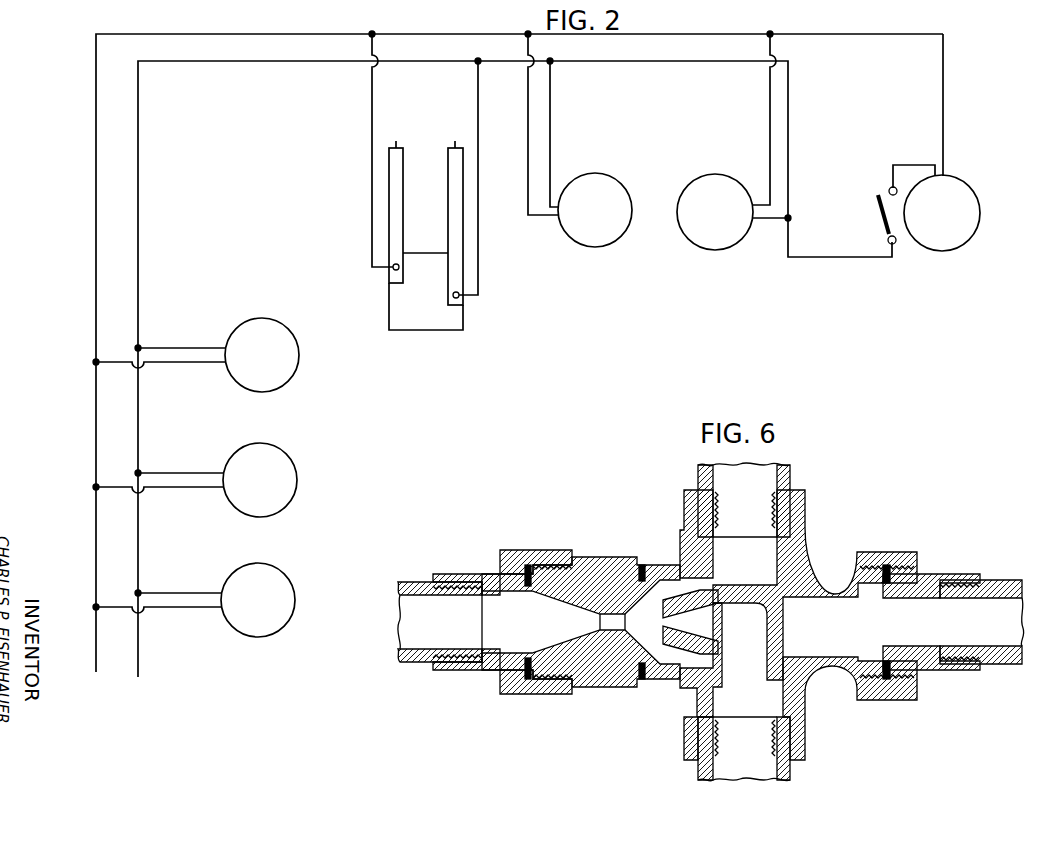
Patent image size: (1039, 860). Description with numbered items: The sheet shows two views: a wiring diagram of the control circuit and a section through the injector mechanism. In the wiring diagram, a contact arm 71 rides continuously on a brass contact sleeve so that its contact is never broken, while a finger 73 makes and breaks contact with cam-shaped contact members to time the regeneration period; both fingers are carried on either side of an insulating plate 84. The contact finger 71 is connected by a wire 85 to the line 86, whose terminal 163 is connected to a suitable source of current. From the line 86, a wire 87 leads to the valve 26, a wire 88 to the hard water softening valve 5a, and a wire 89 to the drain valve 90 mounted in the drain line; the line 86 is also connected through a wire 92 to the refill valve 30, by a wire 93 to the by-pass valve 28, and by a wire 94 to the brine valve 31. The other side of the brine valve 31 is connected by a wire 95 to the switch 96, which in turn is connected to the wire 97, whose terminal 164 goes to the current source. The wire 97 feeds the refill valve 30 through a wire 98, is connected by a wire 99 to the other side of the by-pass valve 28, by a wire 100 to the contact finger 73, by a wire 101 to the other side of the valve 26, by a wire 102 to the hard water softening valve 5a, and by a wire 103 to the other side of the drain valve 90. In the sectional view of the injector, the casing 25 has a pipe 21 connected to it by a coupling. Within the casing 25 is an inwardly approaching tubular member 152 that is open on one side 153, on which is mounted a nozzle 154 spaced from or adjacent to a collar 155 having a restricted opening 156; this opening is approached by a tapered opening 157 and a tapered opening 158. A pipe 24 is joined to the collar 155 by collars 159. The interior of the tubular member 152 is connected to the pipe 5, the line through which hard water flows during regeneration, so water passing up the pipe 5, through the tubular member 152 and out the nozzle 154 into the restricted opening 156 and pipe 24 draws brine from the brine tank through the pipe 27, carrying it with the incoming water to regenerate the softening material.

In FIG. 2, the line 86 is at (274, 34).
In FIG. 2, the wire 97 is at (238, 62).
In FIG. 2, the wire 85 is at (370, 100).
In FIG. 2, the wire 100 is at (479, 103).
In FIG. 2, the contact arm 71 is at (397, 201).
In FIG. 2, the finger 73 is at (454, 212).
In FIG. 2, the insulating plate 84 is at (465, 328).
In FIG. 2, the wire 99 is at (551, 144).
In FIG. 2, the wire 93 is at (528, 189).
In FIG. 2, the by-pass valve 28 is at (621, 239).
In FIG. 2, the wire 92 is at (769, 98).
In FIG. 2, the refill valve 30 is at (711, 175).
In FIG. 2, the wire 98 is at (766, 222).
In FIG. 2, the wire 94 is at (945, 74).
In FIG. 2, the wire 95 is at (893, 165).
In FIG. 2, the switch 96 is at (879, 215).
In FIG. 2, the brine valve 31 is at (957, 247).
In FIG. 2, the wire 101 is at (164, 348).
In FIG. 2, the wire 87 is at (195, 364).
In FIG. 2, the valve 26 is at (298, 372).
In FIG. 2, the wire 102 is at (164, 473).
In FIG. 2, the wire 88 is at (195, 489).
In FIG. 2, the hard water softening valve 5a is at (297, 464).
In FIG. 2, the wire 103 is at (164, 593).
In FIG. 2, the wire 89 is at (195, 609).
In FIG. 2, the drain valve 90 is at (289, 589).
In FIG. 2, the terminal 163 is at (94, 648).
In FIG. 2, the terminal 164 is at (139, 660).
In FIG. 6, the pipe 24 is at (406, 666).
In FIG. 6, the collars 159 is at (478, 672).
In FIG. 6, the collar 155 is at (621, 690).
In FIG. 6, the tapered opening 158 is at (544, 604).
In FIG. 6, the restricted opening 156 is at (598, 626).
In FIG. 6, the tapered opening 157 is at (660, 600).
In FIG. 6, the nozzle 154 is at (706, 592).
In FIG. 6, the open side 153 is at (708, 626).
In FIG. 6, the inwardly approaching tubular member 152 is at (784, 637).
In FIG. 6, the casing 25 is at (803, 574).
In FIG. 6, the pipe 27 is at (791, 476).
In FIG. 6, the pipe 5 is at (791, 776).
In FIG. 6, the pipe 21 is at (1006, 583).